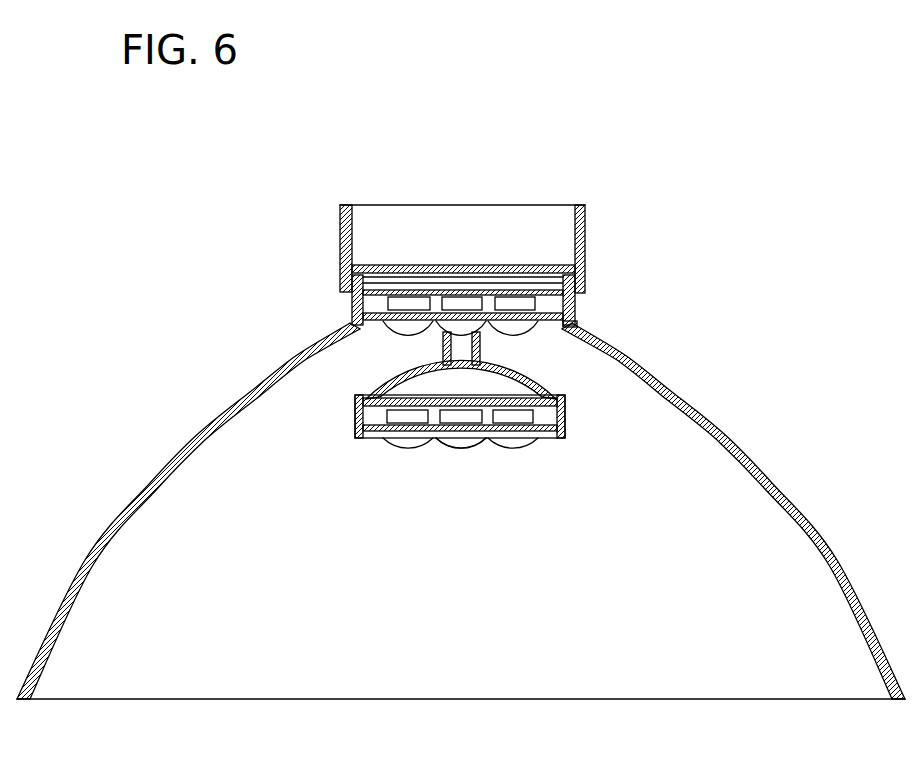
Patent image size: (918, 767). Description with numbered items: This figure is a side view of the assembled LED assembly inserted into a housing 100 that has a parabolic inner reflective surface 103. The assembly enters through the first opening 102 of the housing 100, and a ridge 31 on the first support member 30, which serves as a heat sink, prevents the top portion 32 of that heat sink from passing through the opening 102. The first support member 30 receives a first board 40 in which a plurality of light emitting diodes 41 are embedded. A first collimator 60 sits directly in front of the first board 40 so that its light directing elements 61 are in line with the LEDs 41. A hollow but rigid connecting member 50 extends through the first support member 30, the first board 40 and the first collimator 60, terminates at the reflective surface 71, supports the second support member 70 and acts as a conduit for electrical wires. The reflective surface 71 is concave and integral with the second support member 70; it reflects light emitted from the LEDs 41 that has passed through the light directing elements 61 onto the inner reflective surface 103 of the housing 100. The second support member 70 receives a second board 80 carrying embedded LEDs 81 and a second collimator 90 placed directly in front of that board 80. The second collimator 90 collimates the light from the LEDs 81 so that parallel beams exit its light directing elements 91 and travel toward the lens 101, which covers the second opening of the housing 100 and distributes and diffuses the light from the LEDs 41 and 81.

The first support member 30 is at (475, 305).
The ridge 31 is at (586, 297).
The top portion 32 is at (586, 238).
The first board 40 is at (463, 248).
The light emitting diodes 41 is at (530, 289).
The connecting member 50 is at (481, 340).
The first collimator 60 is at (373, 328).
The light directing elements 61 is at (413, 327).
The second support member 70 is at (468, 437).
The reflective surface 71 is at (542, 388).
The second board 80 is at (548, 402).
The LEDs 81 is at (525, 442).
The second collimator 90 is at (373, 441).
The light directing elements 91 is at (418, 447).
The housing 100 is at (461, 511).
The lens 101 is at (660, 700).
The first opening 102 is at (578, 316).
The inner reflective surface 103 is at (798, 516).